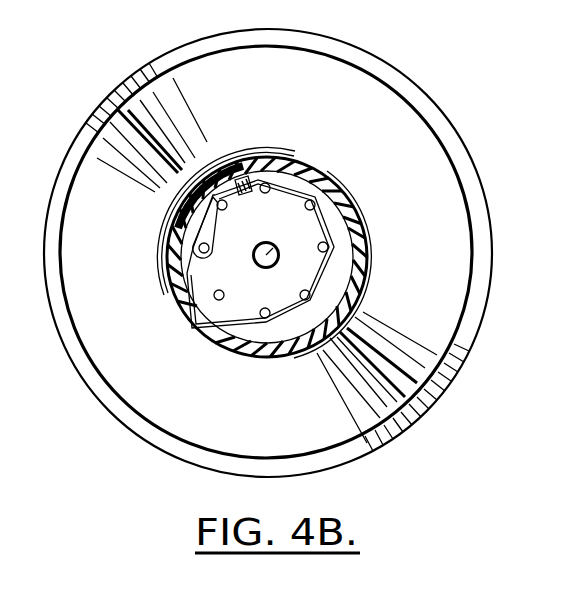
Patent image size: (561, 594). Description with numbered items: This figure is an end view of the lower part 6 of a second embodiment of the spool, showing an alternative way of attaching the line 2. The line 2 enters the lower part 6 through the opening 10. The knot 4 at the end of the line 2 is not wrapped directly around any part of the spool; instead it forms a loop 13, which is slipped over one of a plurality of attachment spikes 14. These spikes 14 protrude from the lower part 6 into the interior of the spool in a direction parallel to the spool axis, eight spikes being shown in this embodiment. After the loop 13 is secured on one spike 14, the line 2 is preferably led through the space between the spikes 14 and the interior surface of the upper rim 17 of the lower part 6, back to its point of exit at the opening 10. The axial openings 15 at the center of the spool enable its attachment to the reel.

The line 2 is at (312, 165).
The knot 4 is at (260, 152).
The lower part 6 is at (418, 96).
The opening 10 is at (205, 340).
The loop 13 is at (168, 222).
The attachment spikes 14 is at (323, 247).
The axial openings 15 is at (268, 253).
The upper rim 17 is at (345, 198).